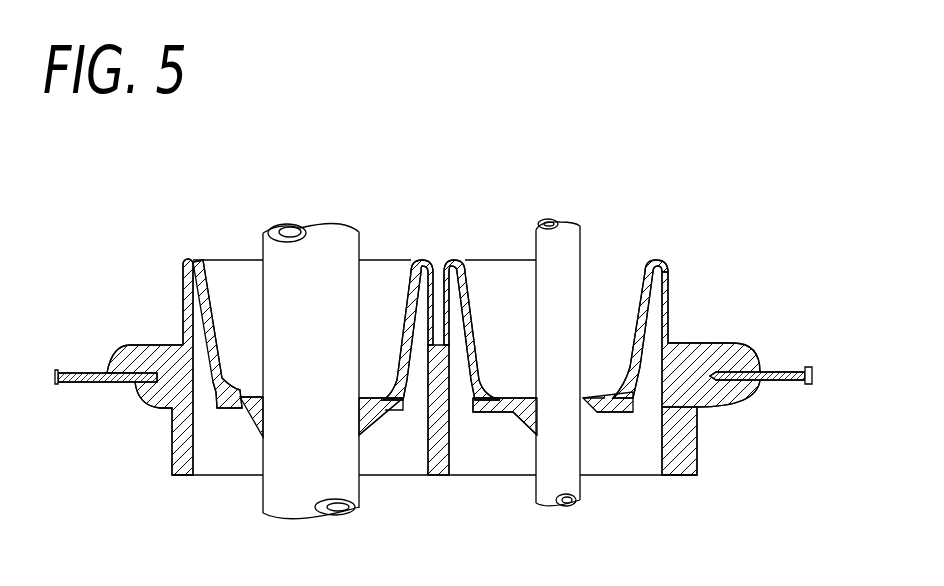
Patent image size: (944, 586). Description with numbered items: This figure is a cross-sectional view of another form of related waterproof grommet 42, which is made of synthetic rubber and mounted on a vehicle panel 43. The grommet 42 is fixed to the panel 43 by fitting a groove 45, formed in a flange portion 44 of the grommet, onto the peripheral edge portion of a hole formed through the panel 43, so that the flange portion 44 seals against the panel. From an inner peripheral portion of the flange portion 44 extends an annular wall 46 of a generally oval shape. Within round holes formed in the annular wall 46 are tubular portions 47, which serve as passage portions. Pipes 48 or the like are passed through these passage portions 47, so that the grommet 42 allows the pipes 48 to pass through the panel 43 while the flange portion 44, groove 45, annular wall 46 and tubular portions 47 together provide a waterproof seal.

The waterproof grommet 42 is at (723, 220).
The vehicle panel 43 is at (793, 383).
The flange portion 44 is at (723, 343).
The groove 45 is at (720, 387).
The annular wall 46 is at (660, 440).
The tubular portion 47 is at (633, 387).
The pipe 48 is at (580, 240).